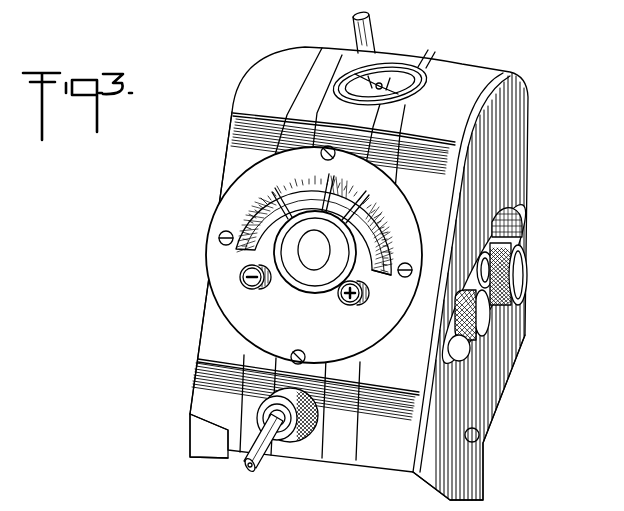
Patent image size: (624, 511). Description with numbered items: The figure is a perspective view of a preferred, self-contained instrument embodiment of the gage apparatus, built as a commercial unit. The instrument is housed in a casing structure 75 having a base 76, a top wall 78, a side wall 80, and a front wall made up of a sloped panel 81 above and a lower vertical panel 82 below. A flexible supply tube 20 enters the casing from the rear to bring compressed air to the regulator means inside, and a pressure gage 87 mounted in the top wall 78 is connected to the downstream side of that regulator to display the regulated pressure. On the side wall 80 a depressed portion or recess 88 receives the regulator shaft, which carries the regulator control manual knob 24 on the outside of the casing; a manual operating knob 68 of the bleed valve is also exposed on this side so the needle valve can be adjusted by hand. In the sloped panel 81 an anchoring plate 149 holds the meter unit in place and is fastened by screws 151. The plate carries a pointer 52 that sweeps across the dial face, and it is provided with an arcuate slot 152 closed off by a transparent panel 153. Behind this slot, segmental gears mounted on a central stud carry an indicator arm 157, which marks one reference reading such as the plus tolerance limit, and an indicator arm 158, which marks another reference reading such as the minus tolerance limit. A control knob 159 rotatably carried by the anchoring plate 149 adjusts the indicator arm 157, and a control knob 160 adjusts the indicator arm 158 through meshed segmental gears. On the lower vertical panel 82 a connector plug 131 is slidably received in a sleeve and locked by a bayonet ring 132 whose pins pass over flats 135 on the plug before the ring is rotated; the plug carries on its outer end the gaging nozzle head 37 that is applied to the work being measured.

The flexible supply tube 20 is at (375, 31).
The regulator control manual knob 24 is at (522, 270).
The gaging nozzle head 37 is at (254, 472).
The pointer 52 is at (340, 188).
The manual operating knob 68 is at (486, 338).
The casing structure 75 is at (533, 93).
The base 76 is at (497, 396).
The top wall 78 is at (486, 78).
The side wall 80 is at (513, 158).
The sloped panel 81 is at (232, 147).
The lower vertical panel 82 is at (201, 388).
The pressure gage 87 is at (408, 72).
The recess 88 is at (508, 226).
The connector plug 131 is at (291, 442).
The bayonet ring 132 is at (313, 442).
The flats 135 is at (276, 406).
The anchoring plate 149 is at (216, 282).
The screws 151 is at (321, 153).
The arcuate slot 152 is at (262, 209).
The transparent panel 153 is at (382, 243).
The indicator arm 157 is at (358, 214).
The indicator arm 158 is at (281, 200).
The control knob 159 is at (351, 306).
The control knob 160 is at (253, 290).